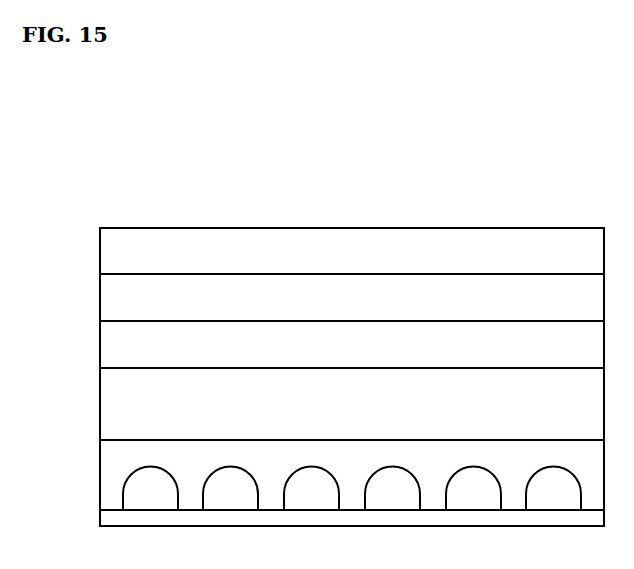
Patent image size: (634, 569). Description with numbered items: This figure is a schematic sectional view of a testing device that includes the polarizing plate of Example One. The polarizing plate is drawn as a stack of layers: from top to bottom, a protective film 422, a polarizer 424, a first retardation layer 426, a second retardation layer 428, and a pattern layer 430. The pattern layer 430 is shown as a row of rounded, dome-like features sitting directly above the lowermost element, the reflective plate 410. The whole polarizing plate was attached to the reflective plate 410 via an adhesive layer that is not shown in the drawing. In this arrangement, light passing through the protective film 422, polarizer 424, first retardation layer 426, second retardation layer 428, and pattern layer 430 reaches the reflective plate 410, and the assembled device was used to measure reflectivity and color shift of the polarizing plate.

The reflective plate 410 is at (118, 518).
The protective film 422 is at (118, 254).
The polarizer 424 is at (118, 300).
The first retardation layer 426 is at (118, 348).
The second retardation layer 428 is at (118, 404).
The pattern layer 430 is at (118, 466).